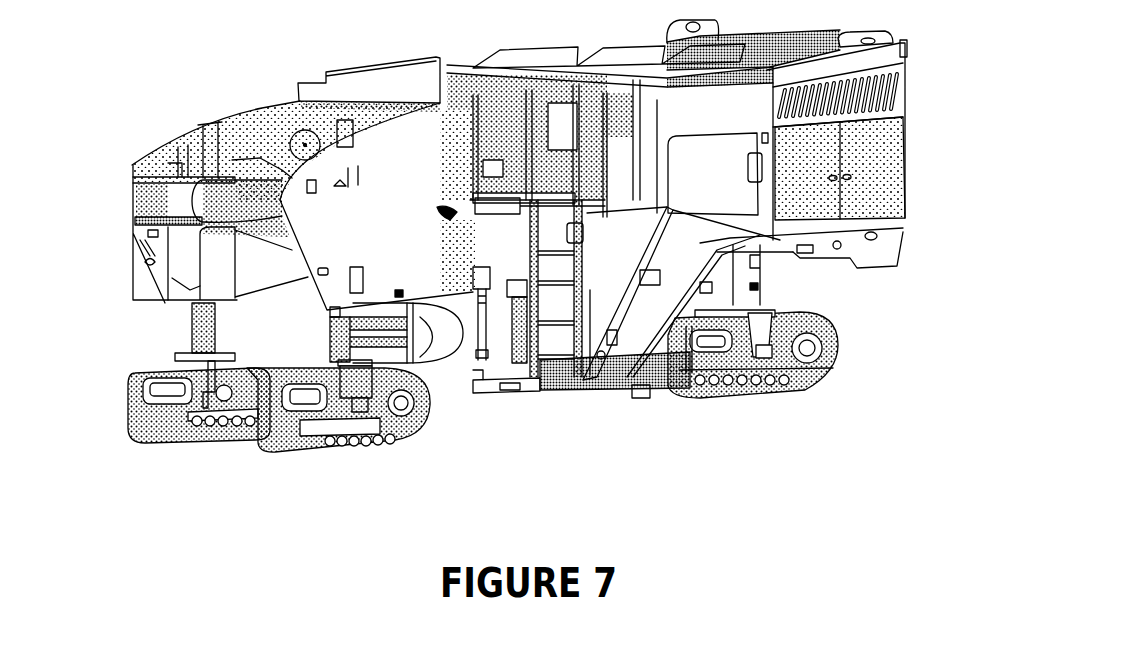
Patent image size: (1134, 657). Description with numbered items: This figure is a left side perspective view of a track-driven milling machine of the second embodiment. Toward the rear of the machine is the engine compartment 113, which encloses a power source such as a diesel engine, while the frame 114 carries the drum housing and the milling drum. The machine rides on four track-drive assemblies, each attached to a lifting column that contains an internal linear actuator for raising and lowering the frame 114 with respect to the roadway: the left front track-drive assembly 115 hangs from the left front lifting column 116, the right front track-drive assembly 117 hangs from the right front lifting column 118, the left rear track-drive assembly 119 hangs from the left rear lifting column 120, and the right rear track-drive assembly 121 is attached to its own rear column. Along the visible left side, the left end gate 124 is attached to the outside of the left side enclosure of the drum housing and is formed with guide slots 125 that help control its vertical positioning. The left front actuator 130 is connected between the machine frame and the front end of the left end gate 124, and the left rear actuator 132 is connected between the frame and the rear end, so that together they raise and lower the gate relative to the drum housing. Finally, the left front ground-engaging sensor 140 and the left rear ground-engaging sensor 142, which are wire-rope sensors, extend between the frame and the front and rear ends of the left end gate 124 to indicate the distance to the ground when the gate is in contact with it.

The engine compartment 113 is at (662, 39).
The frame 114 is at (905, 240).
The left front track-drive assembly 115 is at (380, 459).
The left front lifting column 116 is at (318, 456).
The right front track-drive assembly 117 is at (206, 453).
The right front lifting column 118 is at (188, 332).
The left rear track-drive assembly 119 is at (727, 404).
The left rear lifting column 120 is at (756, 288).
The right rear track-drive assembly 121 is at (634, 404).
The left end gate 124 is at (546, 398).
The guide slots 125 is at (641, 399).
The left front actuator 130 is at (509, 306).
The left rear actuator 132 is at (701, 290).
The left front ground-engaging sensor 140 is at (482, 355).
The left rear ground-engaging sensor 142 is at (714, 333).